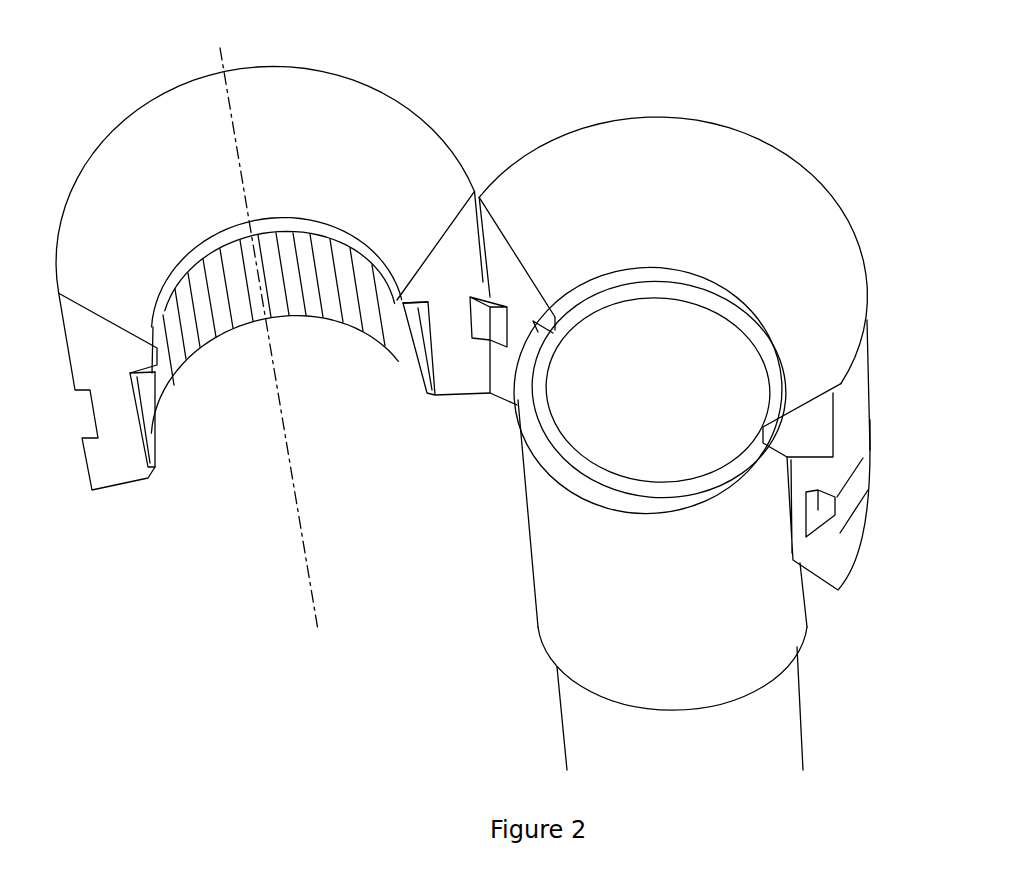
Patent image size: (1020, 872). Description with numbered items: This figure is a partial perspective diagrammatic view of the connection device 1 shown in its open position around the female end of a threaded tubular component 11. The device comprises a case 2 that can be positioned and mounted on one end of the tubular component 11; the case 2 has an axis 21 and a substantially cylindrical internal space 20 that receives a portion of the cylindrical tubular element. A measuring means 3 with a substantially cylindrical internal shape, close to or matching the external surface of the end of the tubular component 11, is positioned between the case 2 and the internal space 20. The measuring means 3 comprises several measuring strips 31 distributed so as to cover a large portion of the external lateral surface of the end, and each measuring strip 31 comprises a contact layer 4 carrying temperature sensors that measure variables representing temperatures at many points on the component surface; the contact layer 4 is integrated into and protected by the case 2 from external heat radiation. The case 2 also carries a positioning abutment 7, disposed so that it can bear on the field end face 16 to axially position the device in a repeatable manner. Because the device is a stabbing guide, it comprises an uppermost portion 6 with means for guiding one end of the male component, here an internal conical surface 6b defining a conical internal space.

The connection device 1 is at (711, 412).
The case 2 is at (857, 392).
The measuring means 3 is at (276, 326).
The contact layer 4 is at (402, 347).
The uppermost portion 6 is at (857, 370).
The internal conical surface 6b is at (375, 118).
The positioning abutment 7 is at (775, 456).
The tubular component 11 is at (788, 628).
The field end face 16 is at (483, 394).
The internal space 20 is at (273, 308).
The axis 21 is at (295, 498).
The measuring strip 31 is at (360, 320).